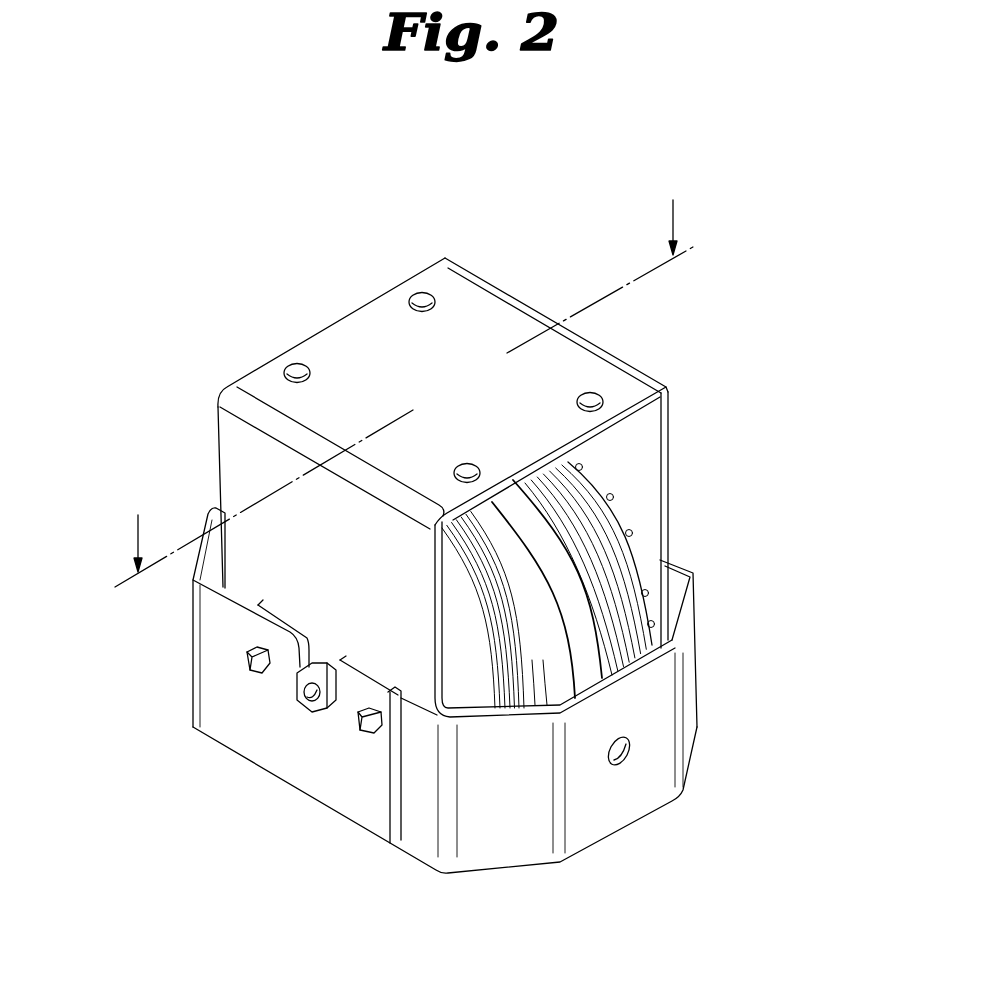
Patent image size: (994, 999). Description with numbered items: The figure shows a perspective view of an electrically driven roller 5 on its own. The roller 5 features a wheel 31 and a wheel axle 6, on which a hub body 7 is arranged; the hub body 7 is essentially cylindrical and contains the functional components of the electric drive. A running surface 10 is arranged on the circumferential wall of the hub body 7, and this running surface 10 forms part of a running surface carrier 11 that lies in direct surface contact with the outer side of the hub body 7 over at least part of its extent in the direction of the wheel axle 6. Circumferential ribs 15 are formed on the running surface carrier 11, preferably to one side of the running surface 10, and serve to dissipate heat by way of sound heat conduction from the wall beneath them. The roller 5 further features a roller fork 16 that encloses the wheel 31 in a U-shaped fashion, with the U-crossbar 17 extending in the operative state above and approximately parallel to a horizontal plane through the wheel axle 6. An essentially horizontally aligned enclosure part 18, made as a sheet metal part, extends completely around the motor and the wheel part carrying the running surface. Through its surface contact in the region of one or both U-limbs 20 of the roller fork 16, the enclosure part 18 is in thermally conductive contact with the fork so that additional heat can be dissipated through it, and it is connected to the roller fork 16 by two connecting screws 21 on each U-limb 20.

The electrically driven roller 5 is at (441, 516).
The wheel axle 6 is at (313, 693).
The hub body 7 is at (440, 697).
The running surface 10 is at (555, 688).
The running surface carrier 11 is at (582, 537).
The circumferential ribs 15 is at (623, 580).
The roller fork 16 is at (386, 487).
The U-crossbar 17 is at (377, 348).
The enclosure part 18 is at (657, 703).
The U-limbs 20 is at (272, 565).
The connecting screws 21 is at (360, 722).
The wheel 31 is at (490, 687).